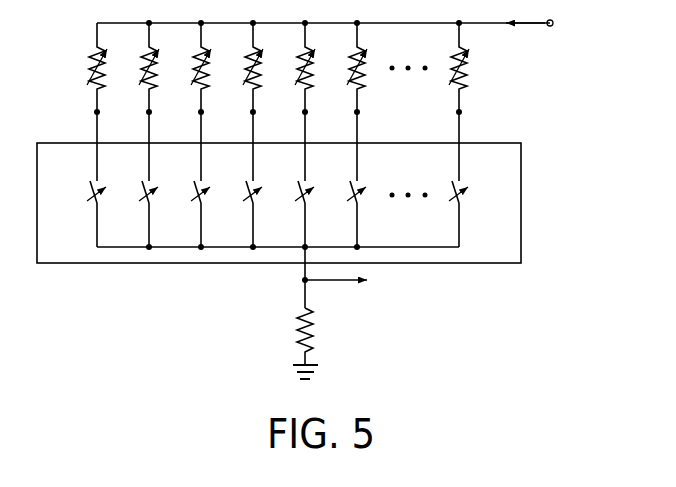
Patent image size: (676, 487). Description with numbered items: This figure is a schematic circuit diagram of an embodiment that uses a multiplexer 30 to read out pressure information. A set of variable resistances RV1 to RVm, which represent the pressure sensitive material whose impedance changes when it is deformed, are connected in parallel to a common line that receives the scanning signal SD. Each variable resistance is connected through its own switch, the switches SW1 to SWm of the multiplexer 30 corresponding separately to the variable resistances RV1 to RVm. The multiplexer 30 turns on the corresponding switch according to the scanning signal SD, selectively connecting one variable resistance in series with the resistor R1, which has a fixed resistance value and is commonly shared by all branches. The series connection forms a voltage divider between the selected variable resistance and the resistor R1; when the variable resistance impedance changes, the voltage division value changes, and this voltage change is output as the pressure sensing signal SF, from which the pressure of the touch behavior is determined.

The multiplexer 30 is at (521, 159).
The variable resistance RV1 is at (77, 102).
The variable resistance RVm is at (480, 102).
The switch SW1 is at (74, 214).
The switch SWm is at (481, 214).
The resistor R1 is at (290, 336).
The scanning signal SD is at (543, 26).
The pressure sensing signal SF is at (349, 283).